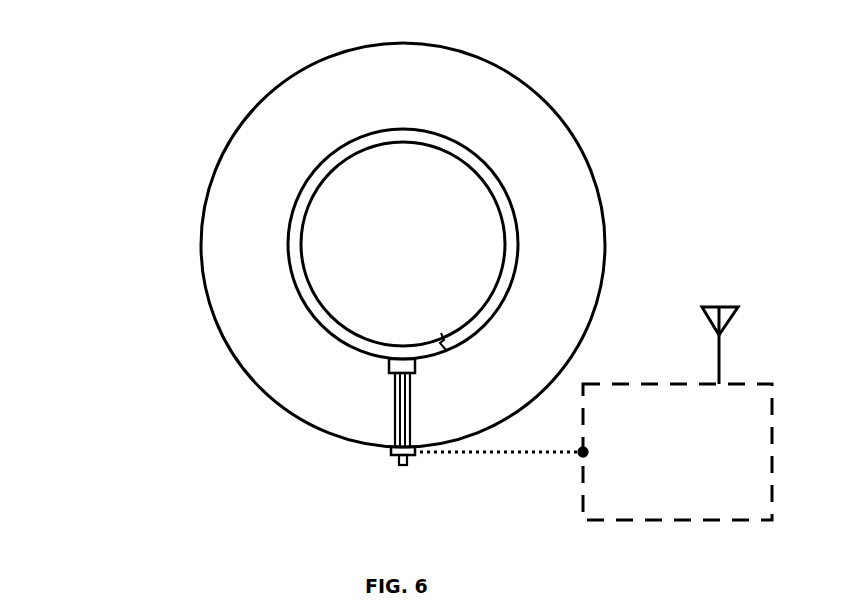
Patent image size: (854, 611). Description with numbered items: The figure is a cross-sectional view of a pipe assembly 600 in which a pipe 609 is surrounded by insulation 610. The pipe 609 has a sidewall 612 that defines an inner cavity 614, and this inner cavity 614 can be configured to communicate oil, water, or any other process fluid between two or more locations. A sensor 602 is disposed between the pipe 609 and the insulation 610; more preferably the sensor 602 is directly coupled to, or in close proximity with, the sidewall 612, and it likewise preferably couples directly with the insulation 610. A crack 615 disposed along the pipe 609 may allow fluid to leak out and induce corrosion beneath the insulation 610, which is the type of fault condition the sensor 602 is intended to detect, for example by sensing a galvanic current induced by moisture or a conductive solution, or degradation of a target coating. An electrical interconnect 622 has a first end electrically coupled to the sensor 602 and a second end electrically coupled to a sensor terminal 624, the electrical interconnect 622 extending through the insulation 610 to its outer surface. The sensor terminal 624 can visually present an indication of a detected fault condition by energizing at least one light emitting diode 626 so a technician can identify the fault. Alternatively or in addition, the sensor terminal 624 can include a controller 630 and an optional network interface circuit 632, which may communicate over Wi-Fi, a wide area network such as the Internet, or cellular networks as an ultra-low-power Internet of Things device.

The pipe assembly 600 is at (160, 47).
The sensor 602 is at (415, 365).
The pipe 609 is at (421, 256).
The insulation 610 is at (276, 307).
The sidewall 612 is at (330, 350).
The inner cavity 614 is at (318, 251).
The crack 615 is at (438, 320).
The electrical interconnect 622 is at (395, 377).
The sensor terminal 624 is at (375, 458).
The light emitting diode (LED) 626 is at (388, 480).
The controller 630 is at (697, 479).
The network interface circuit 632 is at (723, 333).